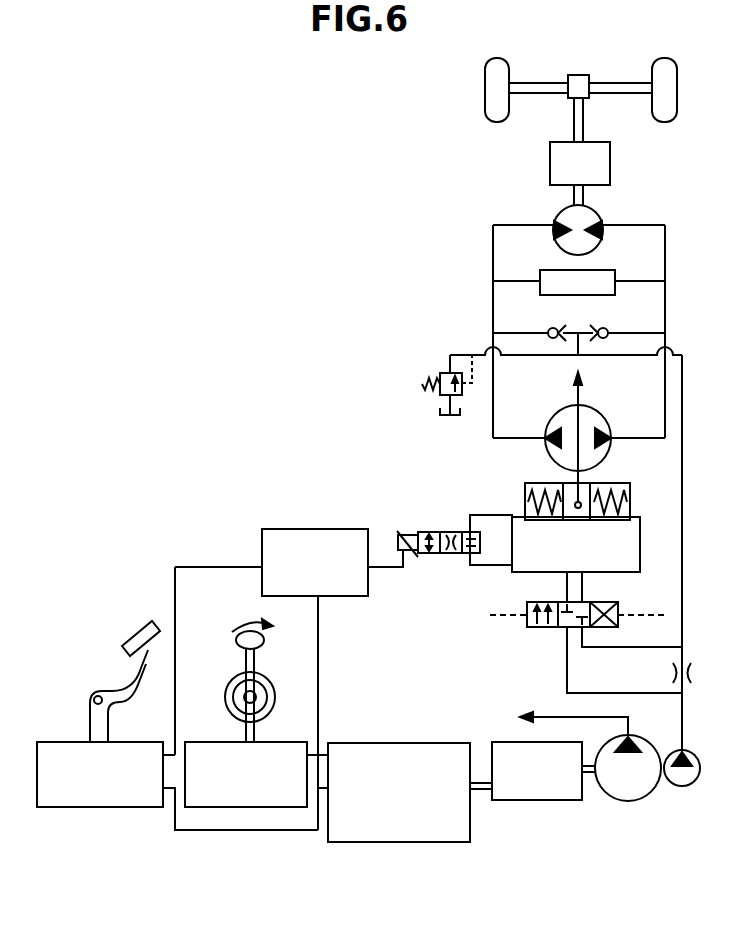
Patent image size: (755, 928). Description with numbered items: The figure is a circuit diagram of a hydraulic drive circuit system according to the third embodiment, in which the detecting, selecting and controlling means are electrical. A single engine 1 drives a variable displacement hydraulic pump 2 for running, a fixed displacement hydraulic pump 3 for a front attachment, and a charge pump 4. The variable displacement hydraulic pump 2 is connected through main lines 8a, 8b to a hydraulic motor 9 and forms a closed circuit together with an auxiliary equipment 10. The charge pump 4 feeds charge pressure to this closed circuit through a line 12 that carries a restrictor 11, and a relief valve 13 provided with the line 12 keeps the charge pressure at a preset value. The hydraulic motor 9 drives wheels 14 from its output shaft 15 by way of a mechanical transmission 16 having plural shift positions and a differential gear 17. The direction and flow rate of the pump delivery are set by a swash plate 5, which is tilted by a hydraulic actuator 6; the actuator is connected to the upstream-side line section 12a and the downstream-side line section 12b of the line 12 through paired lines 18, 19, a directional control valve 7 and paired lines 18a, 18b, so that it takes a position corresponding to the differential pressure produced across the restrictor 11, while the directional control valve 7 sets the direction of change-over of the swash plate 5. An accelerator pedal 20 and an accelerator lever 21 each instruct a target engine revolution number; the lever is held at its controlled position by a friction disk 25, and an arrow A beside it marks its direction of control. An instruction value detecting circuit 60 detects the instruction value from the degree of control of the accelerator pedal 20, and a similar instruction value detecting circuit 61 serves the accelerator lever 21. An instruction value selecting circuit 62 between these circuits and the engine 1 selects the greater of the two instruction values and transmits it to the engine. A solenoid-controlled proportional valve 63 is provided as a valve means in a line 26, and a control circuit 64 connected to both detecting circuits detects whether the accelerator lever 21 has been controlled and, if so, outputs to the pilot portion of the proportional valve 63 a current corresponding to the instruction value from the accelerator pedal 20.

The engine 1 is at (538, 796).
The variable displacement hydraulic pump 2 is at (606, 423).
The fixed displacement hydraulic pump 3 is at (625, 797).
The charge pump 4 is at (681, 789).
The swash plate 5 is at (580, 400).
The hydraulic actuator 6 is at (630, 497).
The directional control valve 7 is at (618, 607).
The main line 8a is at (665, 427).
The main line 8b is at (493, 396).
The hydraulic motor 9 is at (558, 214).
The auxiliary equipment 10 is at (607, 272).
The restrictor 11 is at (688, 683).
The line 12 is at (683, 545).
The upstream-side line section 12a is at (683, 742).
The downstream-side line section 12b is at (683, 634).
The relief valve 13 is at (441, 374).
The wheels 14 is at (508, 66).
The output shaft 15 is at (590, 198).
The mechanical transmission 16 is at (610, 171).
The differential gear 17 is at (582, 78).
The line 18 is at (566, 655).
The line 18a is at (513, 547).
The line 18b is at (640, 547).
The line 19 is at (610, 648).
The accelerator pedal 20 is at (116, 690).
The accelerator lever 21 is at (258, 667).
The friction disk 25 is at (268, 707).
The line 26 is at (487, 515).
The instruction value detecting circuit 60 is at (97, 808).
The instruction value detecting circuit 61 is at (238, 808).
The instruction value selecting circuit 62 is at (360, 843).
The solenoid-controlled proportional valve 63 is at (413, 530).
The control circuit 64 is at (331, 529).
The lever rotation direction A is at (244, 627).